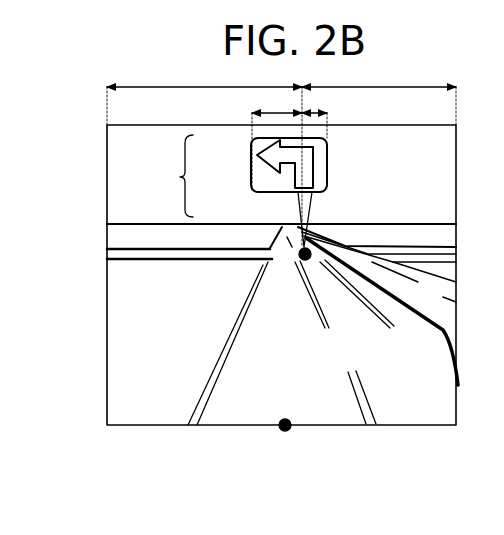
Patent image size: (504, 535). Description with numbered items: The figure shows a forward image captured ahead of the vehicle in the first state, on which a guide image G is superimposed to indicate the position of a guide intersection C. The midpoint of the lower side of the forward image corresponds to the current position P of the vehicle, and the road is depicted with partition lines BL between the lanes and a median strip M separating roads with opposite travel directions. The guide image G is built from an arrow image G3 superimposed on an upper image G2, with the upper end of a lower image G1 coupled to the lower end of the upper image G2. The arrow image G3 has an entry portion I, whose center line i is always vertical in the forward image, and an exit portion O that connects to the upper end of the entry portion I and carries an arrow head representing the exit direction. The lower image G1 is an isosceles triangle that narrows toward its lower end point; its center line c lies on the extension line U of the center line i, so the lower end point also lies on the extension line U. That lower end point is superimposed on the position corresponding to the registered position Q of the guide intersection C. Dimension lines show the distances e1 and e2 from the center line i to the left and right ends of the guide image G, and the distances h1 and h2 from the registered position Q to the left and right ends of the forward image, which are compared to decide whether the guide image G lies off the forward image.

The guide image G is at (173, 176).
The lower image G1 is at (292, 213).
The upper image G2 is at (251, 175).
The arrow image G3 is at (251, 142).
The exit portion O is at (252, 186).
The entry portion I is at (328, 160).
The center line of the entry portion i is at (340, 179).
The extension line U is at (329, 203).
The center line of the lower image c is at (314, 201).
The registered position Q is at (348, 240).
The guide intersection C is at (312, 257).
The partition lines BL is at (198, 396).
The median strip M is at (440, 362).
The current position P is at (291, 428).
The distance to left end of forward image h1 is at (204, 75).
The distance to right end of forward image h2 is at (379, 75).
The distance to left end of guide image e1 is at (277, 102).
The distance to right end of guide image e2 is at (318, 102).